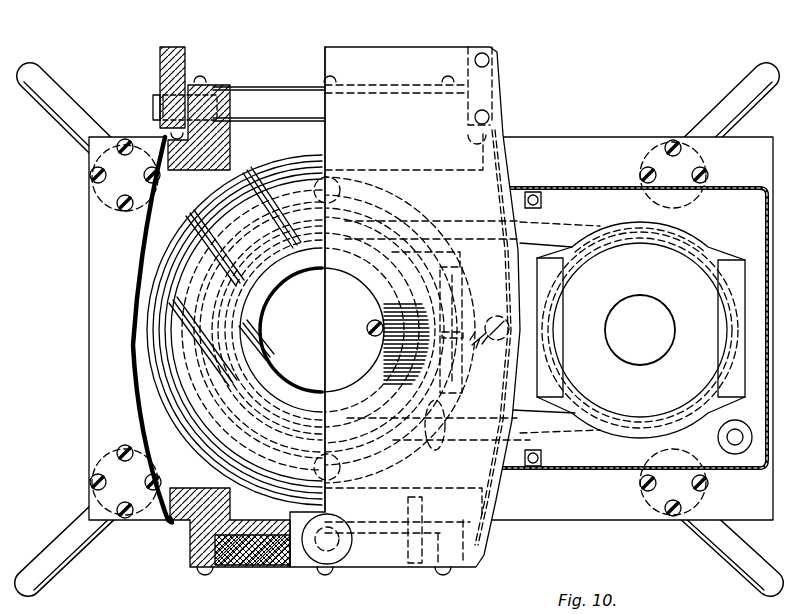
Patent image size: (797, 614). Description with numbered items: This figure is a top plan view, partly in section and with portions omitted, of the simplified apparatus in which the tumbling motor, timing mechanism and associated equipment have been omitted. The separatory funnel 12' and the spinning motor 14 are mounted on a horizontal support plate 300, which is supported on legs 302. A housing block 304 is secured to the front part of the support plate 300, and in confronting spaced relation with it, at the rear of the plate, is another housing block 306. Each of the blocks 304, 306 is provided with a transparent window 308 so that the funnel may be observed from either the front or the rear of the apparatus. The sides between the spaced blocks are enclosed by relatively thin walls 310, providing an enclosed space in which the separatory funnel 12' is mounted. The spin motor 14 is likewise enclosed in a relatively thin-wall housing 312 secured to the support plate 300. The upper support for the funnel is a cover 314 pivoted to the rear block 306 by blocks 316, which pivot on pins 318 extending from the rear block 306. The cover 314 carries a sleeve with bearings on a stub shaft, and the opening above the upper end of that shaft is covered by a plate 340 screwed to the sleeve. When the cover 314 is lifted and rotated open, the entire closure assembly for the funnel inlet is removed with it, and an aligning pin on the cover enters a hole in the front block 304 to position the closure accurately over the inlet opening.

The separatory funnel 12' is at (311, 279).
The spinning motor 14 is at (652, 365).
The horizontal support plate 300 is at (567, 507).
The legs 302 is at (58, 572).
The housing block 304 is at (190, 555).
The housing block 306 is at (212, 98).
The transparent window 308 is at (265, 100).
The thin walls 310 is at (133, 348).
The thin-wall housing 312 is at (567, 188).
The cover 314 is at (437, 48).
The blocks 316 is at (186, 62).
The pins 318 is at (156, 100).
The plate 340 is at (366, 320).